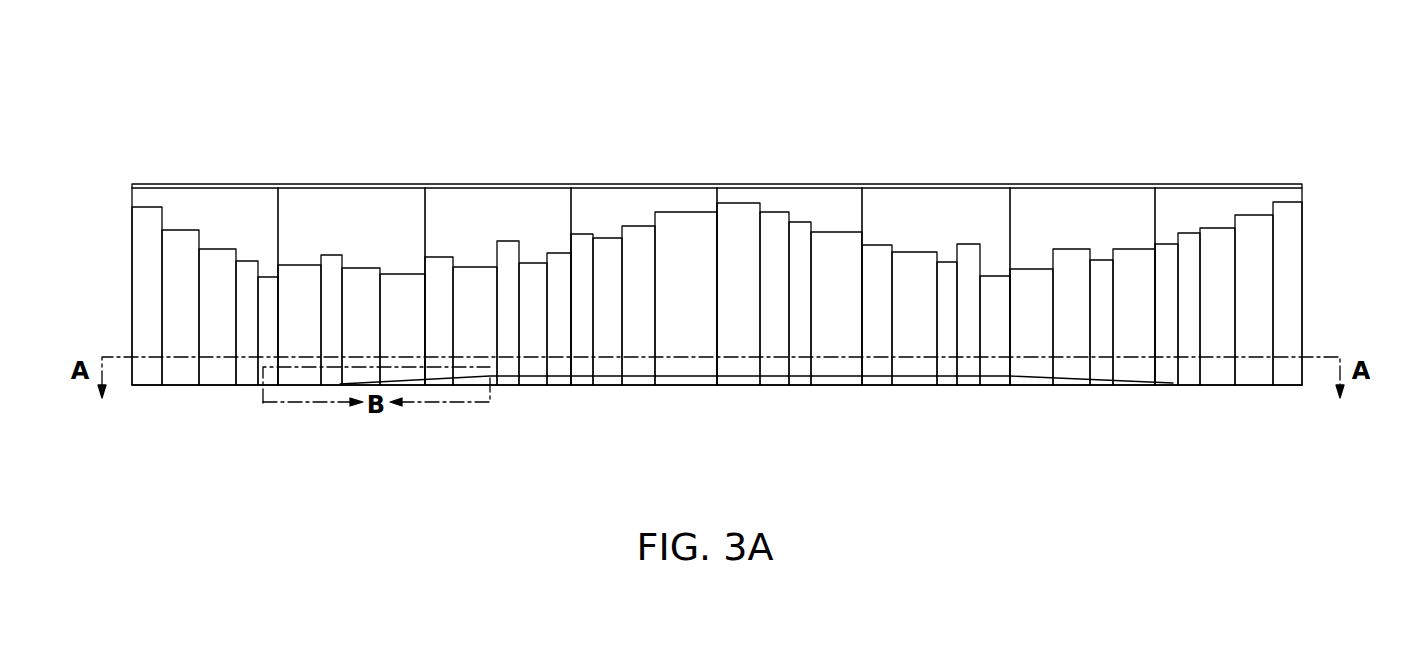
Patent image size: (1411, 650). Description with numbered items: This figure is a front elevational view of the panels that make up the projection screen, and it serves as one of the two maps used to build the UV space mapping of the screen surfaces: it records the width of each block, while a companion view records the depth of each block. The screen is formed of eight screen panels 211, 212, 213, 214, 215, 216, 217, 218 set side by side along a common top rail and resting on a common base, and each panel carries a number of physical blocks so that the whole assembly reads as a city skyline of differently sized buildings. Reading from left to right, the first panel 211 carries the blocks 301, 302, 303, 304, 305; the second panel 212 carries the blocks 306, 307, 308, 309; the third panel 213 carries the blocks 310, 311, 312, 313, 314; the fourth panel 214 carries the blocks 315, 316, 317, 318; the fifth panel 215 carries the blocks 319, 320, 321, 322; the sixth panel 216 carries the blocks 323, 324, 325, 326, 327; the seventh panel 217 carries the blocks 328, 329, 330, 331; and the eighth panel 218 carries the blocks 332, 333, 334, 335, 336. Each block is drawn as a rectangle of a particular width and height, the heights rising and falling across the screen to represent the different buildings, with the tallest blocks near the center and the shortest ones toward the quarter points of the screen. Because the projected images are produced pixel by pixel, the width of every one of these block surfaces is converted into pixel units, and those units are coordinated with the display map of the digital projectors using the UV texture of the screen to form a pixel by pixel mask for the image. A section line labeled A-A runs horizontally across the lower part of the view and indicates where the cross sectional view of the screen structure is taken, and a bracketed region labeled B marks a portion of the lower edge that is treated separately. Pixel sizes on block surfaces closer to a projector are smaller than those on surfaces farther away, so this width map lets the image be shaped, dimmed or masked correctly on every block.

The screen panel 211 is at (168, 184).
The screen panel 212 is at (320, 184).
The screen panel 213 is at (442, 184).
The screen panel 214 is at (720, 184).
The screen panel 215 is at (832, 184).
The screen panel 216 is at (972, 184).
The screen panel 217 is at (1103, 184).
The screen panel 218 is at (1193, 184).
The block 301 is at (143, 207).
The block 302 is at (175, 230).
The block 303 is at (218, 249).
The block 304 is at (248, 261).
The block 305 is at (272, 277).
The block 306 is at (308, 265).
The block 307 is at (335, 255).
The block 308 is at (372, 268).
The block 309 is at (408, 274).
The block 310 is at (445, 257).
The block 311 is at (475, 267).
The block 312 is at (508, 241).
The block 313 is at (530, 263).
The block 314 is at (565, 253).
The block 315 is at (590, 234).
The block 316 is at (613, 323).
The block 317 is at (640, 345).
The block 318 is at (682, 347).
The block 319 is at (735, 350).
The block 320 is at (778, 212).
The block 321 is at (807, 222).
The block 322 is at (840, 232).
The block 323 is at (878, 245).
The block 324 is at (905, 370).
The block 325 is at (947, 370).
The block 326 is at (965, 367).
The block 327 is at (992, 276).
The block 328 is at (1028, 269).
The block 329 is at (1075, 249).
The block 330 is at (1103, 260).
The block 331 is at (1140, 249).
The block 332 is at (1167, 370).
The block 333 is at (1185, 372).
The block 334 is at (1215, 228).
The block 335 is at (1257, 215).
The block 336 is at (1290, 202).